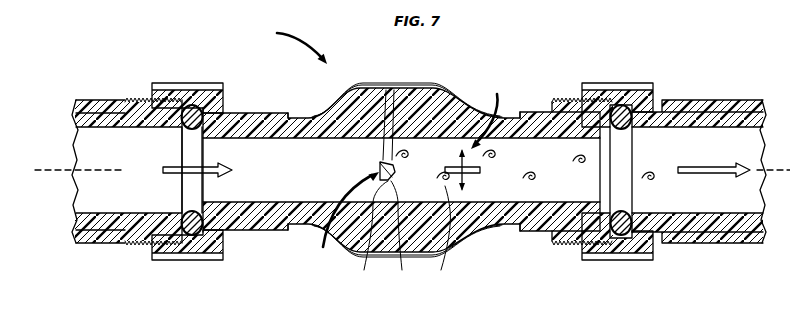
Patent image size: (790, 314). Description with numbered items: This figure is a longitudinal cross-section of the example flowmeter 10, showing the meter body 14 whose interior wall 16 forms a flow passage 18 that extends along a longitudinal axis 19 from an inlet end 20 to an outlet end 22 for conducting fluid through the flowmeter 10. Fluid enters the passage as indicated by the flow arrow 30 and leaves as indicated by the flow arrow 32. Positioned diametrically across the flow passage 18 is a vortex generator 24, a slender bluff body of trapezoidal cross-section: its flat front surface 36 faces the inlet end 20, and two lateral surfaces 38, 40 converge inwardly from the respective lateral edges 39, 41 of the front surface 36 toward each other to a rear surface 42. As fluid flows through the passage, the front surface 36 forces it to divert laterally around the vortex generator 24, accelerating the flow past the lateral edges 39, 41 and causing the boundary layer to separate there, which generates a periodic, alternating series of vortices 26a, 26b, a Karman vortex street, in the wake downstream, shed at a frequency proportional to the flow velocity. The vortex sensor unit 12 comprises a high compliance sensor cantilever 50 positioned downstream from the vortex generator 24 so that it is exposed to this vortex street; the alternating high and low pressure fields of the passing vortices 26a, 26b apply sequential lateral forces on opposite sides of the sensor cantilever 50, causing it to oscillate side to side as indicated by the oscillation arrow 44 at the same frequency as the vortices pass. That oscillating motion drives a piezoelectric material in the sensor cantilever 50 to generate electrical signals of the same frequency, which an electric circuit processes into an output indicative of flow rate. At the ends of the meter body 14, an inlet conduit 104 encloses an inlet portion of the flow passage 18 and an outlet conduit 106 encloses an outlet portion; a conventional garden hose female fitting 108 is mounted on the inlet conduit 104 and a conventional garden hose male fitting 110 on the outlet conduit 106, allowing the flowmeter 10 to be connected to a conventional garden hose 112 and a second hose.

The flowmeter 10 is at (484, 156).
The vortex sensor unit 12 is at (562, 126).
The meter body 14 is at (467, 232).
The interior wall 16 is at (314, 147).
The flow passage 18 is at (265, 180).
The longitudinal axis 19 is at (48, 168).
The inlet end 20 is at (200, 173).
The outlet end 22 is at (603, 177).
The vortex generator 24 is at (346, 221).
The vortex 26a is at (386, 147).
The vortex 26b is at (447, 233).
The flow arrow 30 is at (170, 166).
The flow arrow 32 is at (703, 166).
The flat front surface 36 is at (380, 168).
The lateral surface 38 is at (343, 104).
The lateral edge 39 is at (380, 163).
The lateral surface 40 is at (403, 234).
The lateral edge 41 is at (370, 234).
The rear surface 42 is at (397, 175).
The oscillation arrow 44 is at (467, 174).
The sensor cantilever 50 is at (445, 167).
The inlet conduit 104 is at (240, 115).
The outlet conduit 106 is at (533, 121).
The garden hose female fitting 108 is at (220, 112).
The garden hose male fitting 110 is at (575, 99).
The garden hose 112 is at (97, 100).